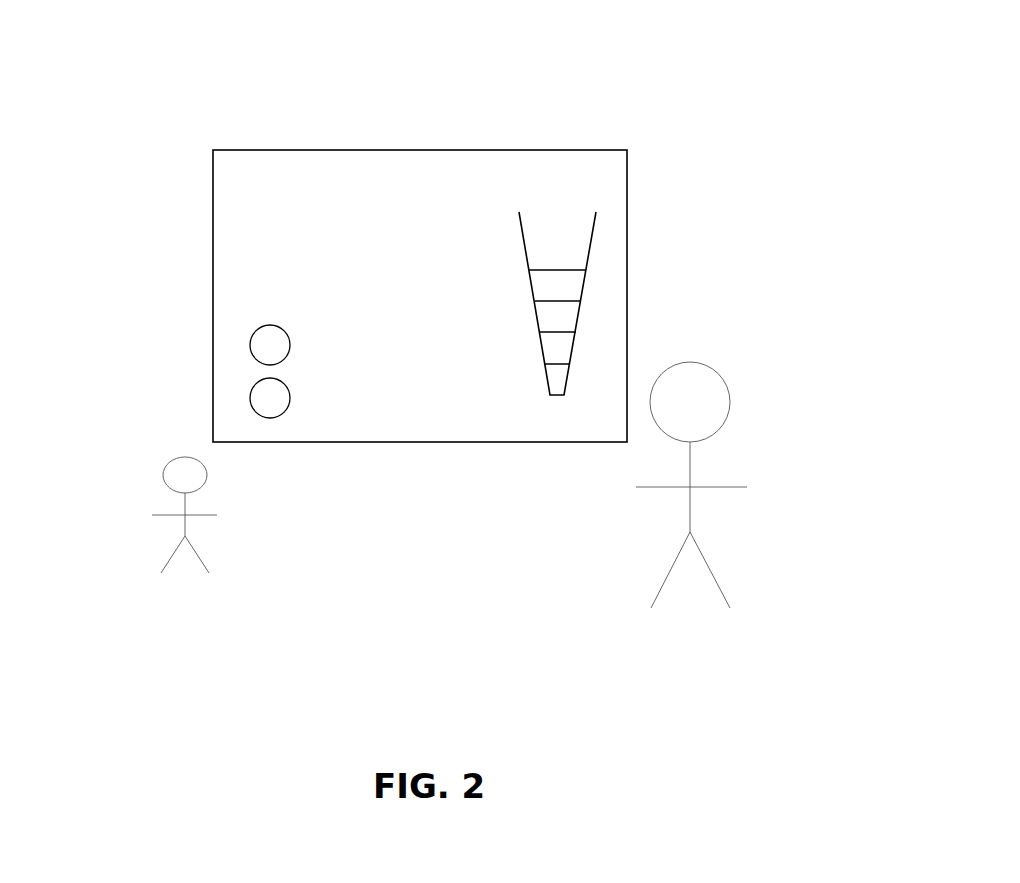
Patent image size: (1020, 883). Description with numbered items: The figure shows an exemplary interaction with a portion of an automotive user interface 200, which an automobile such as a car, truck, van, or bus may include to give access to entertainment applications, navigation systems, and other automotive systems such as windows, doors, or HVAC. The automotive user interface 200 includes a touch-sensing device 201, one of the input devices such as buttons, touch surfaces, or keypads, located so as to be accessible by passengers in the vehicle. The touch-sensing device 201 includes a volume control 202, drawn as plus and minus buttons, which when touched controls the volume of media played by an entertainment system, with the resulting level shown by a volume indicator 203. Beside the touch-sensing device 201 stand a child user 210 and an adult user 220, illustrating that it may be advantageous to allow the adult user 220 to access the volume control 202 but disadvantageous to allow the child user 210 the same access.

The automotive user interface 200 is at (486, 104).
The touch-sensing device 201 is at (627, 181).
The volume control 202 is at (250, 344).
The volume indicator 203 is at (595, 230).
The child user 210 is at (160, 514).
The adult user 220 is at (728, 487).